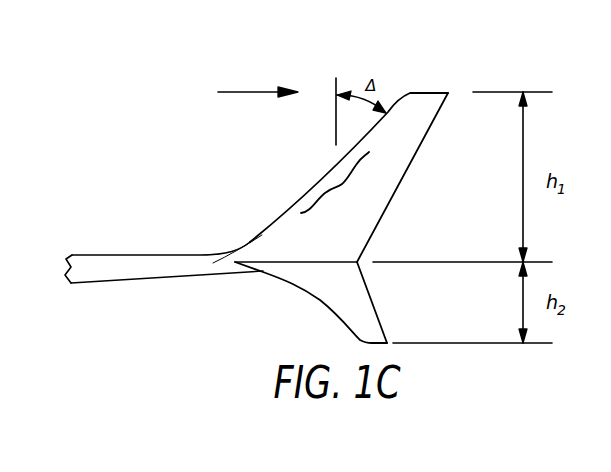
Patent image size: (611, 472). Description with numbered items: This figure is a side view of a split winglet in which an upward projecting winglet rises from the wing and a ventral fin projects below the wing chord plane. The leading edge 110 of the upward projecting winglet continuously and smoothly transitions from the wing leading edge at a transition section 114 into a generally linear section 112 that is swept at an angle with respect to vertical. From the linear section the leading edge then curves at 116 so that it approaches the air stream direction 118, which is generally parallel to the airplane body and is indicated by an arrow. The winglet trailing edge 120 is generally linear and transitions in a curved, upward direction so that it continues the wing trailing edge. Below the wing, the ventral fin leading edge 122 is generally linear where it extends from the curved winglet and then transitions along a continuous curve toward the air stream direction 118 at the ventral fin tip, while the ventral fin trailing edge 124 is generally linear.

The leading edge of the upward projecting winglet 110 is at (303, 194).
The generally linear section 112 is at (339, 182).
The transition section 114 is at (260, 215).
The leading edge tip curve 116 is at (403, 53).
The air stream direction 118 is at (237, 92).
The winglet trailing edge 120 is at (415, 154).
The ventral fin leading edge 122 is at (301, 287).
The lower trailing edge 124 is at (367, 288).